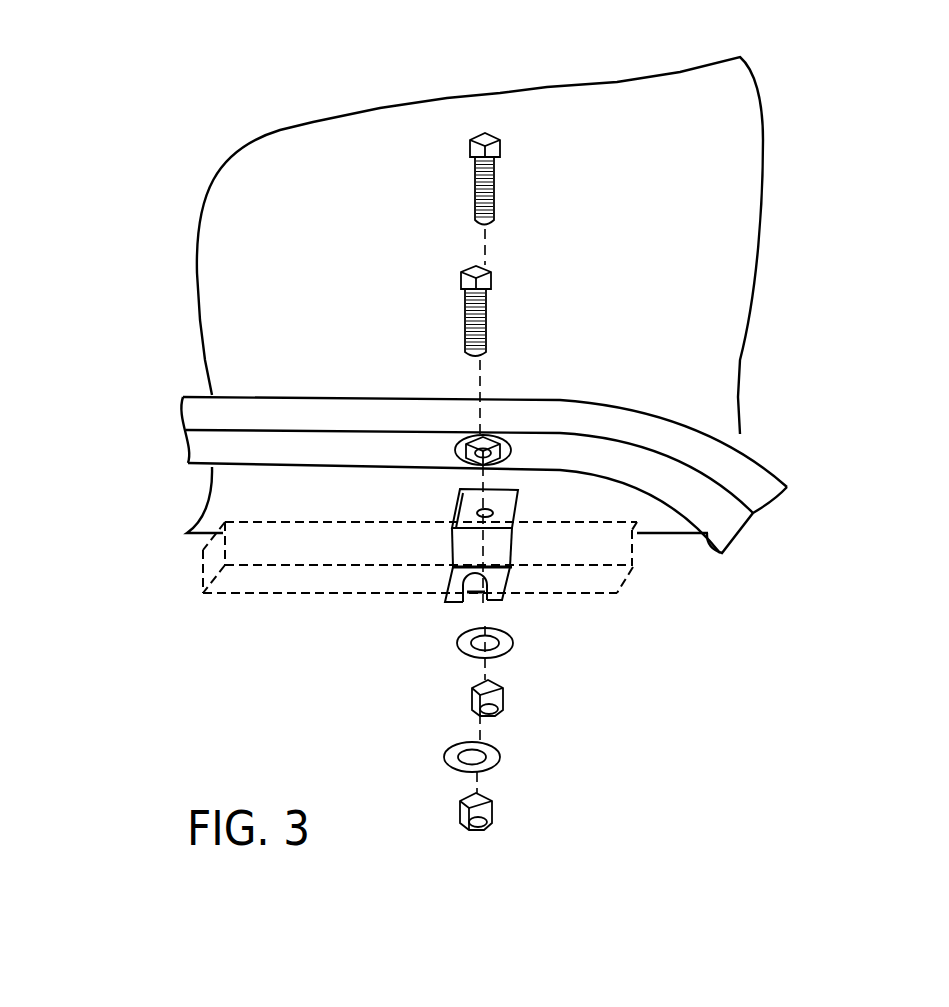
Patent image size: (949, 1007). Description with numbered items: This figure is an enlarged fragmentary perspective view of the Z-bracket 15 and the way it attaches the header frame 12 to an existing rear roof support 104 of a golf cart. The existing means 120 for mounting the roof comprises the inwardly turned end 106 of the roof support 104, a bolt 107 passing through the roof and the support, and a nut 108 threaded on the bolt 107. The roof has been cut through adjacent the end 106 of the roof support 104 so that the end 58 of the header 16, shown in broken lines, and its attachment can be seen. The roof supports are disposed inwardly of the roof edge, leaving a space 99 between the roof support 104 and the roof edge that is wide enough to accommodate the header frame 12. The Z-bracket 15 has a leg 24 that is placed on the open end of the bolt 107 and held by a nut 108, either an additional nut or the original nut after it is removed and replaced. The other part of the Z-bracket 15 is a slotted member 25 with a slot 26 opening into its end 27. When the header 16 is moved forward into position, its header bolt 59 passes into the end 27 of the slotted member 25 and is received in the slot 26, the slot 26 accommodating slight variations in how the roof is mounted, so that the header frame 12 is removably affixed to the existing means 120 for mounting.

The header frame 12 is at (248, 588).
The Z-bracket 15 is at (475, 582).
The header 16 is at (610, 550).
The leg 24 is at (488, 522).
The slotted member 25 is at (503, 600).
The slot 26 is at (472, 604).
The end 27 is at (447, 608).
The end of header 58 is at (210, 563).
The header bolt 59 is at (465, 315).
The space 99 is at (228, 502).
The roof support 104 is at (643, 427).
The inwardly turned end 106 is at (182, 427).
The bolt 107 is at (493, 187).
The nut 108 is at (503, 698).
The means for mounting 120 is at (867, 386).